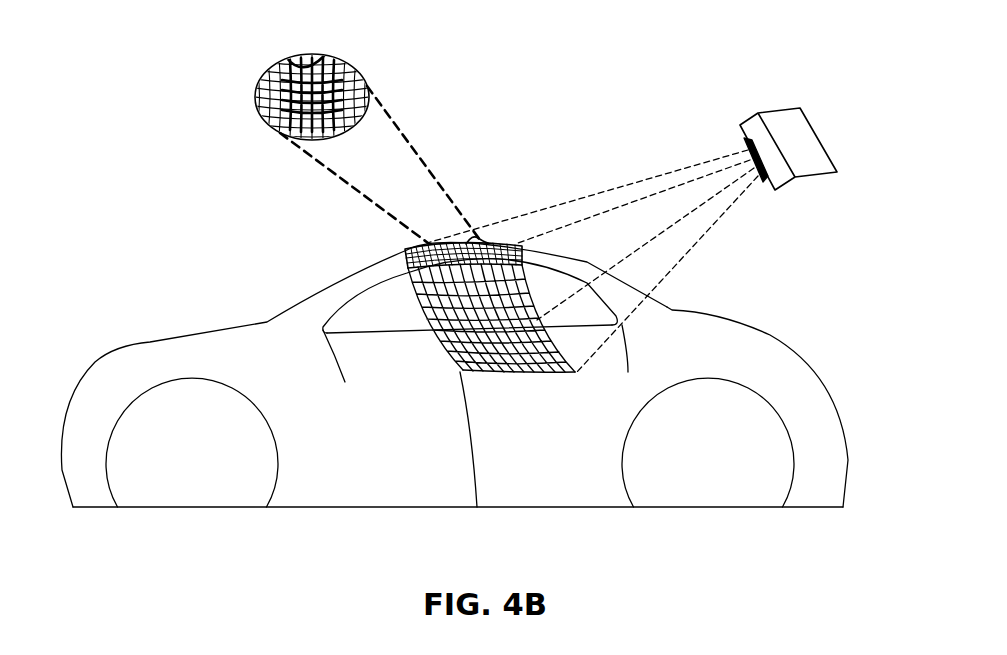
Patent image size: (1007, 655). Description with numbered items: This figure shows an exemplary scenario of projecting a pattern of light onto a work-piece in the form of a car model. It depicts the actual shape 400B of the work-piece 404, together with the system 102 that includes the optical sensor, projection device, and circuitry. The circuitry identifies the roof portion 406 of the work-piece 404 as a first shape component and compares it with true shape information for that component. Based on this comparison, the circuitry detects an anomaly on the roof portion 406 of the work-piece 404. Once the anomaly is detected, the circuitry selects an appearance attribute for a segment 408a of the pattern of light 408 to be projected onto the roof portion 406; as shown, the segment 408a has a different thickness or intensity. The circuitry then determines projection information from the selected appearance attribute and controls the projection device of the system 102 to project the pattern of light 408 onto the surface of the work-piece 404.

The system 102 is at (771, 102).
The actual shape 400B is at (204, 269).
The work-piece 404 is at (745, 322).
The roof portion 406 is at (258, 83).
The pattern of light 408 is at (413, 307).
The segment of the pattern of light 408a is at (310, 66).